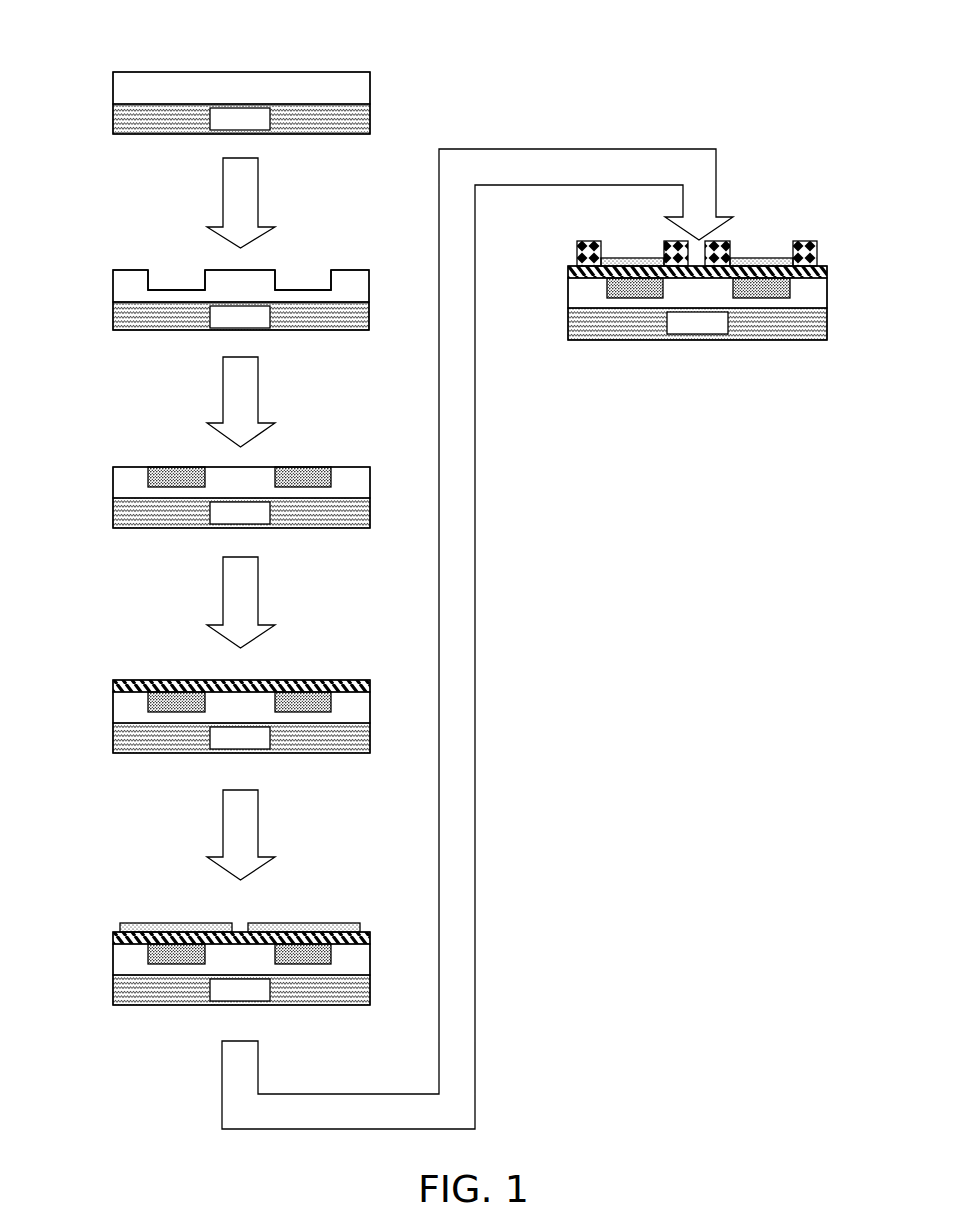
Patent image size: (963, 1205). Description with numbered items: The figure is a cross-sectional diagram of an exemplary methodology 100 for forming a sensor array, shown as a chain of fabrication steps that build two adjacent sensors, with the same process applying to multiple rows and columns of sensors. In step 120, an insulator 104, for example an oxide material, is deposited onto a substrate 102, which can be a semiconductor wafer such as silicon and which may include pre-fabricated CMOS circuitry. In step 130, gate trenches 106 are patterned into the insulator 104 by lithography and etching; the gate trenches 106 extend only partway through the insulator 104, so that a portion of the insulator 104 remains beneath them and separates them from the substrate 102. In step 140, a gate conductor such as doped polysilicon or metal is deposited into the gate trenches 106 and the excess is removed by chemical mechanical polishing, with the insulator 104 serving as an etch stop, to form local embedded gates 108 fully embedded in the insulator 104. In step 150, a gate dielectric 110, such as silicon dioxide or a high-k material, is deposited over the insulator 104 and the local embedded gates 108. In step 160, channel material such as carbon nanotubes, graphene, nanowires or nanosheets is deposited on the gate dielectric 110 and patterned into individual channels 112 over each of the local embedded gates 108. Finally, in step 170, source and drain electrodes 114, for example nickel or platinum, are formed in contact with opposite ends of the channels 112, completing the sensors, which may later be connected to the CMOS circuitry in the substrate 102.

The methodology 100 is at (818, 28).
The substrate 102 is at (112, 118).
The insulator 104 is at (112, 89).
The gate trenches 106 is at (172, 267).
The local embedded gates 108 is at (176, 466).
The gate dielectric 110 is at (303, 679).
The channels 112 is at (165, 922).
The source and drain electrodes 114 is at (576, 257).
The step 120 is at (86, 47).
The step 130 is at (93, 250).
The step 140 is at (94, 454).
The step 150 is at (96, 665).
The step 160 is at (103, 906).
The step 170 is at (838, 243).